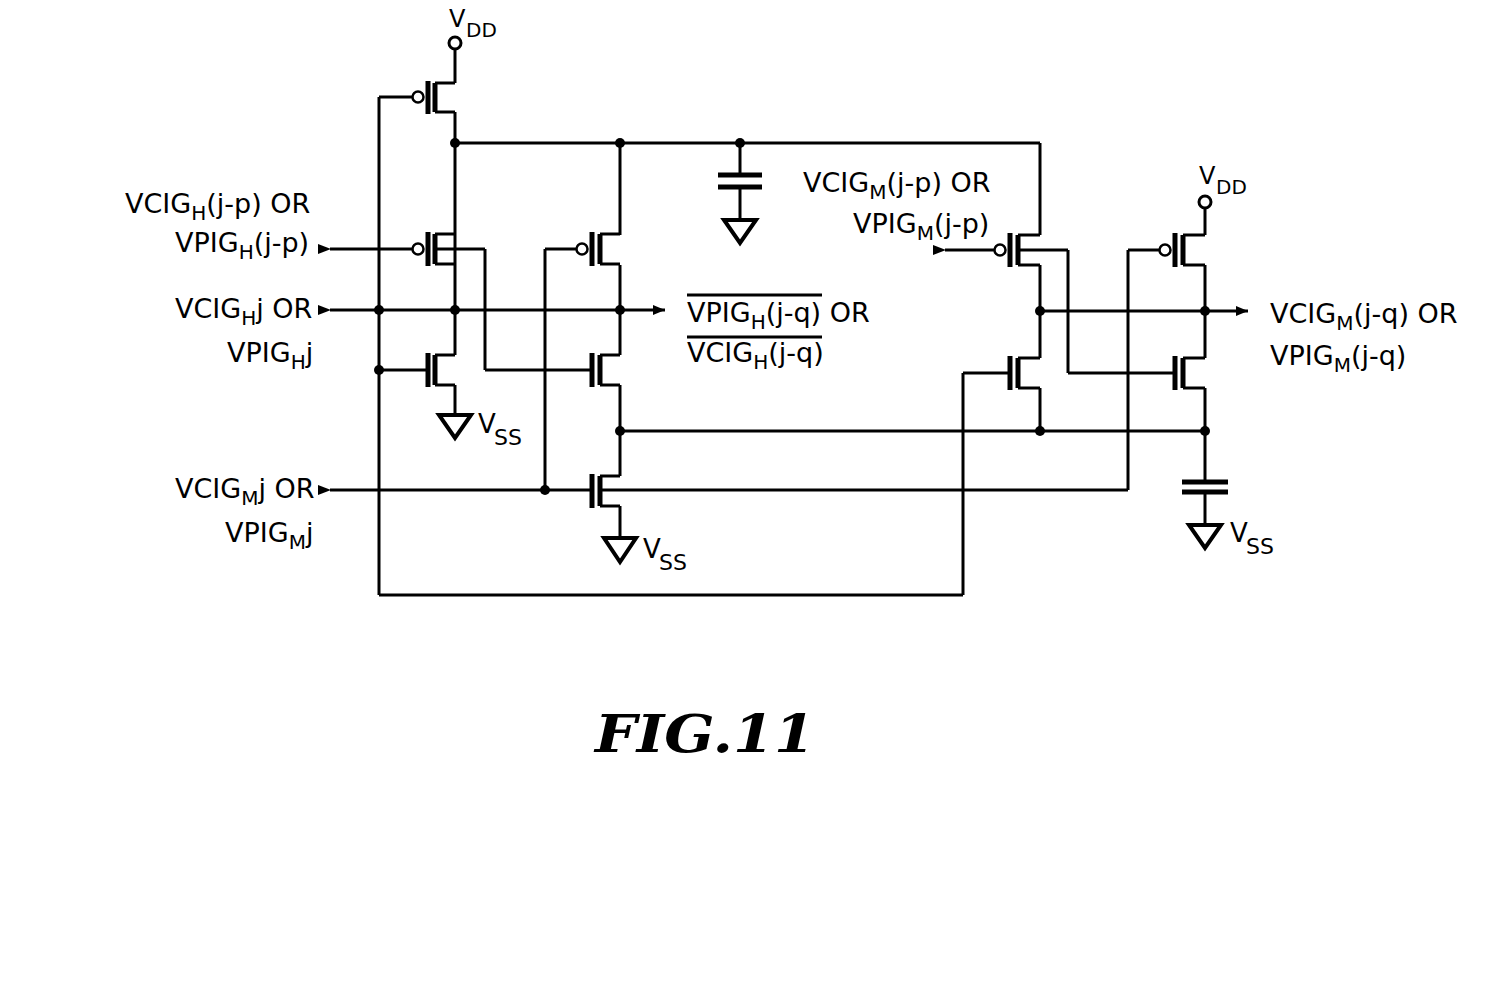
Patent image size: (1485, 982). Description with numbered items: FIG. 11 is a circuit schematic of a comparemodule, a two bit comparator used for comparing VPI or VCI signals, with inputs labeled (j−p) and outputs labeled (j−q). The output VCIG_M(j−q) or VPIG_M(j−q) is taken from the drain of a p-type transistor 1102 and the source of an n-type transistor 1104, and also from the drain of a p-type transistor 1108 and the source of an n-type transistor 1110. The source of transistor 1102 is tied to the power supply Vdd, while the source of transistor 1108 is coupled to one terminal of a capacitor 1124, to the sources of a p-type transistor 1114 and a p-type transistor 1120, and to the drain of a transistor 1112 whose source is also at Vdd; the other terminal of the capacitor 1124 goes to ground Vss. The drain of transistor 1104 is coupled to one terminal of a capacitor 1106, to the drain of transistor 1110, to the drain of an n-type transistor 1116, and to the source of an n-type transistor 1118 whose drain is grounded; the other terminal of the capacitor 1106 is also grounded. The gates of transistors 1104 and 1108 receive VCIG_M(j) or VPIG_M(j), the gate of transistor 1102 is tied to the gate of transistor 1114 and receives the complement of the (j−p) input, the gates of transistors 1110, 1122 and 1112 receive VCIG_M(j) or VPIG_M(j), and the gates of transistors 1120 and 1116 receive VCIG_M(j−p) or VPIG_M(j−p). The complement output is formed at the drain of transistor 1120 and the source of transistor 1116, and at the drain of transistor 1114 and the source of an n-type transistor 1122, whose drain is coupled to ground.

The p-type transistor 1102 is at (1175, 233).
The n-type transistor 1104 is at (1175, 390).
The capacitor 1106 is at (1215, 478).
The p-type transistor 1108 is at (1010, 270).
The n-type transistor 1110 is at (1010, 355).
The transistor 1112 is at (428, 80).
The p-type transistor 1114 is at (592, 232).
The n-type transistor 1116 is at (593, 388).
The n-type transistor 1118 is at (591, 508).
The p-type transistor 1120 is at (428, 232).
The n-type transistor 1122 is at (428, 353).
The capacitor 1124 is at (728, 190).